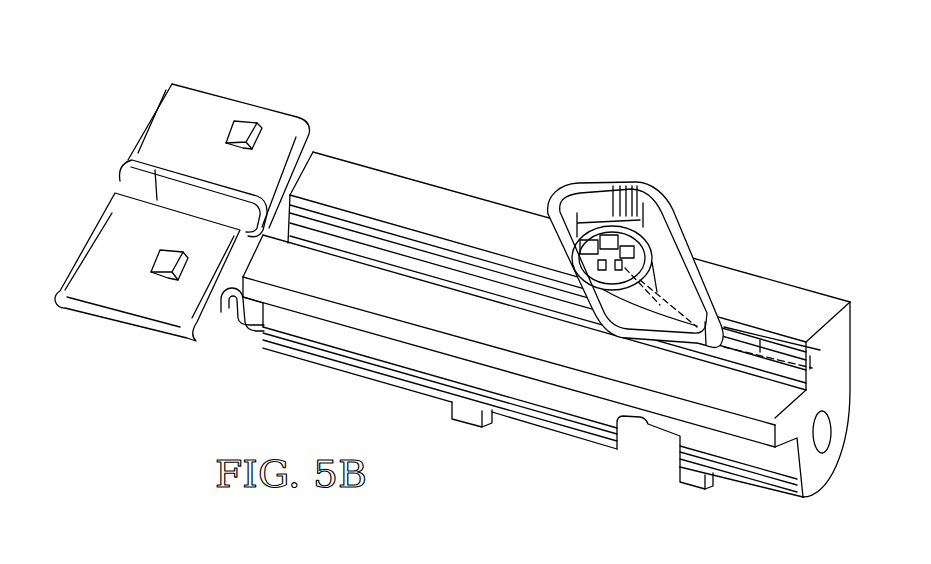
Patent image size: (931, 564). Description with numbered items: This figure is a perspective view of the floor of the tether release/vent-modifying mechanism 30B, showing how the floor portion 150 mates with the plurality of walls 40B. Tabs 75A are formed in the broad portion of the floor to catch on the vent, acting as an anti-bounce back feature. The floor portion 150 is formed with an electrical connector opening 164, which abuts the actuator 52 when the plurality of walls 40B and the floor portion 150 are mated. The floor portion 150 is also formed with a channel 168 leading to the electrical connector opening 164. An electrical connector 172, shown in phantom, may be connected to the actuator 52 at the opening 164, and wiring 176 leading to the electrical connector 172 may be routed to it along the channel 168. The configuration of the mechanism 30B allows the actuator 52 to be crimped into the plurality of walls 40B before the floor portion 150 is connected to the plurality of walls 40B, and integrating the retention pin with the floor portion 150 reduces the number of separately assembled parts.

The tether release/vent-modifying mechanism 30B is at (655, 481).
The tabs 75A is at (245, 121).
The floor portion 150 is at (452, 212).
The plurality of walls 40B is at (551, 407).
The actuator 52 is at (595, 243).
The electrical connector 172 is at (675, 211).
The electrical connector opening 164 is at (648, 243).
The channel 168 is at (762, 346).
The wiring 176 is at (812, 360).